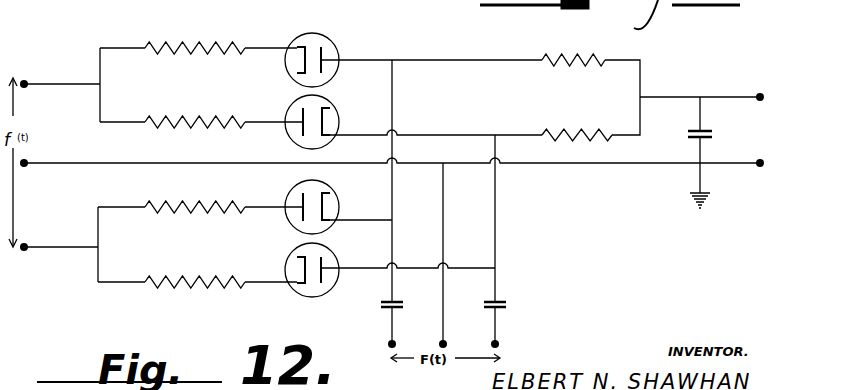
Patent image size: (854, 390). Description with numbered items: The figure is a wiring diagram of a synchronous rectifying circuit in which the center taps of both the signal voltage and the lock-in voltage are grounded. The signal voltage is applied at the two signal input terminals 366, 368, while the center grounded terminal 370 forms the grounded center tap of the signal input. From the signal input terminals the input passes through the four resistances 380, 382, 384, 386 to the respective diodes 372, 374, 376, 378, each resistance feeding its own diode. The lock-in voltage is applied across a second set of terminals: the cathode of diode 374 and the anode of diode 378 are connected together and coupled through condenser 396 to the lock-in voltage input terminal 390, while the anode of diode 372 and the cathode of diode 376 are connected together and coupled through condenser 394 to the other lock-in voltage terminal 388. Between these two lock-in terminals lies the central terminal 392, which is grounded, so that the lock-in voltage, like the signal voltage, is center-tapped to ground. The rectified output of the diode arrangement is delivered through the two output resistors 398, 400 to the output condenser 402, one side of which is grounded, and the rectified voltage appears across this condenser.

The signal input terminal 366 is at (25, 82).
The signal input terminal 368 is at (26, 247).
The center grounded terminal 370 is at (26, 163).
The diode 372 is at (296, 36).
The diode 374 is at (287, 111).
The diode 376 is at (286, 197).
The diode 378 is at (290, 259).
The resistance 380 is at (184, 47).
The resistance 382 is at (176, 121).
The resistance 384 is at (177, 206).
The resistance 386 is at (181, 281).
The lock-in voltage terminal 388 is at (393, 343).
The lock-in voltage input terminal 390 is at (497, 343).
The central terminal 392 is at (444, 343).
The condenser 394 is at (394, 303).
The condenser 396 is at (498, 303).
The resistor 398 is at (572, 58).
The resistor 400 is at (569, 133).
The condenser 402 is at (708, 131).